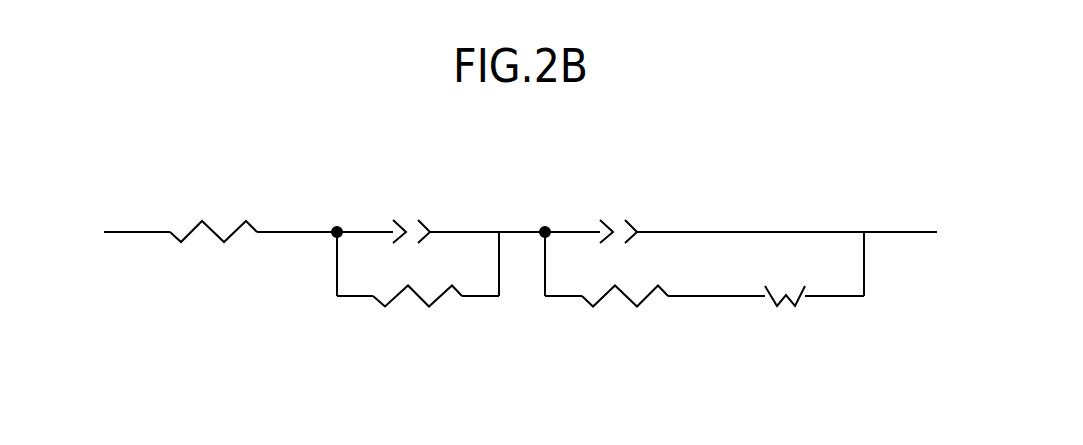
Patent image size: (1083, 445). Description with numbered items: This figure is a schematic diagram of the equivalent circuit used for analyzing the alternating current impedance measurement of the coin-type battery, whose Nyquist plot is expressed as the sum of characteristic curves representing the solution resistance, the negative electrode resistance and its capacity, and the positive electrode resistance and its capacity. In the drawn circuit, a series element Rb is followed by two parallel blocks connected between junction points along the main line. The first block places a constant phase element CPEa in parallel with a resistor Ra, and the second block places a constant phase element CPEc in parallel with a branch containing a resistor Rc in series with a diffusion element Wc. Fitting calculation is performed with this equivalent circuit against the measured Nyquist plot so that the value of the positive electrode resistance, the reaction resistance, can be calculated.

The bulk (electrolyte) resistance Rb is at (213, 214).
The constant phase element of anode CPEa is at (407, 215).
The anode charge-transfer resistance Ra is at (417, 279).
The constant phase element of cathode CPEc is at (613, 215).
The cathode charge-transfer resistance Rc is at (625, 279).
The Warburg diffusion element of cathode Wc is at (791, 291).